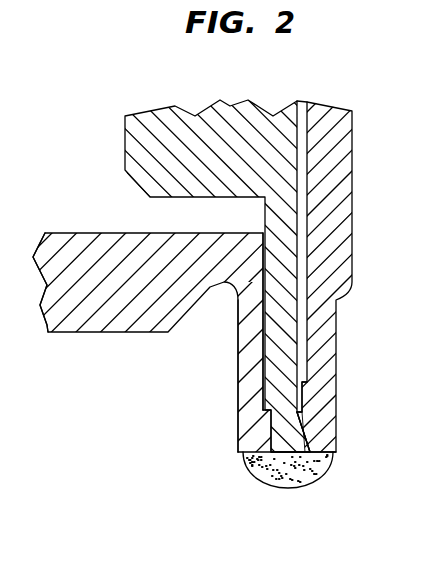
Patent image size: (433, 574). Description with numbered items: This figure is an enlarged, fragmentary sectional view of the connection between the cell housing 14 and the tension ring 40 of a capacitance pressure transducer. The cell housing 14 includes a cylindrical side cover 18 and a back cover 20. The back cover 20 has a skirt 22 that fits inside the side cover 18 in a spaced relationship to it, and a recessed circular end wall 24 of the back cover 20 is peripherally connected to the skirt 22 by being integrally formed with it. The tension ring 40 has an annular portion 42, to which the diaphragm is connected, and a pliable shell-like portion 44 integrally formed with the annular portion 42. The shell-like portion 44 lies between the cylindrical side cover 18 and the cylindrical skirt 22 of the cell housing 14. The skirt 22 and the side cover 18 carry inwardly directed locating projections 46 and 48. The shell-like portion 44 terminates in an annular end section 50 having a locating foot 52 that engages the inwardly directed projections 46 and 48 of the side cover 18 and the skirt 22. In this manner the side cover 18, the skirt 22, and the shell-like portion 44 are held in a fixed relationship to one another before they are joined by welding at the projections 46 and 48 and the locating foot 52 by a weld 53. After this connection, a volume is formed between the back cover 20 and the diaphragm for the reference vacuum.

The cell housing 14 is at (216, 287).
The cylindrical side cover 18 is at (340, 253).
The back cover 20 is at (216, 287).
The skirt 22 is at (243, 355).
The recessed circular end wall 24 is at (48, 322).
The tension ring 40 is at (216, 287).
The annular portion 42 is at (152, 130).
The shell-like portion 44 is at (281, 341).
The locating projection 46 is at (267, 430).
The locating projection 48 is at (306, 394).
The annular end section 50 is at (293, 464).
The locating foot 52 is at (306, 438).
The weld 53 is at (266, 472).